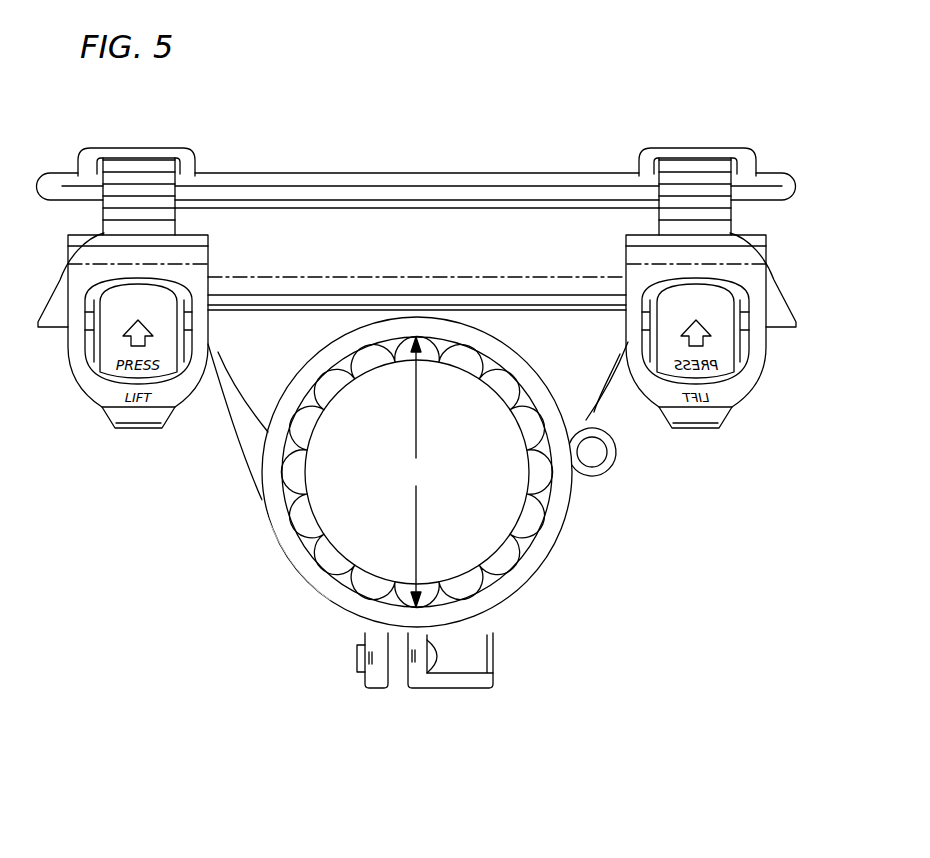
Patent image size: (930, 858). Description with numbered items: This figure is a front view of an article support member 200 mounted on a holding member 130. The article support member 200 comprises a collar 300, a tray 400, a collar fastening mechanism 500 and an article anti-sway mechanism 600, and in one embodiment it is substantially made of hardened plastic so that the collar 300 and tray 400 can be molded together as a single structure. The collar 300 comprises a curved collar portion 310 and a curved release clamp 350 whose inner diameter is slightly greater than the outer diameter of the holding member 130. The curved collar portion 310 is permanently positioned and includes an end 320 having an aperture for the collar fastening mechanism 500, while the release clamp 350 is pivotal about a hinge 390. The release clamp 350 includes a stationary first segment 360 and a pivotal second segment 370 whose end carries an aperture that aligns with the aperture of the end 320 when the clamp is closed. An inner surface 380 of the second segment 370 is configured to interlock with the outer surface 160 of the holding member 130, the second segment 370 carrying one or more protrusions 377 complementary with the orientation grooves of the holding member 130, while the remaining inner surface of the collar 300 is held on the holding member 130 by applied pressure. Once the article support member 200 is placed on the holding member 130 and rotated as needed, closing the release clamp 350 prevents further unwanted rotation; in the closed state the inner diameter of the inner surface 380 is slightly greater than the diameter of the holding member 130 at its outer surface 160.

The article support member 200 is at (204, 648).
The article anti-sway mechanism 600 is at (783, 170).
The tray 400 is at (777, 279).
The curved collar portion 310 is at (248, 470).
The stationary first segment 360 is at (557, 392).
The collar 300 is at (588, 492).
The release clamp 350 is at (572, 547).
The holding member 130 is at (375, 364).
The outer surface 160 is at (285, 447).
The inner surface 380 is at (293, 548).
The pivotal second segment 370 is at (540, 585).
The protrusions 377 is at (485, 603).
The hinge 390 is at (590, 448).
The collar fastening mechanism 500 is at (467, 694).
The end 320 is at (386, 682).